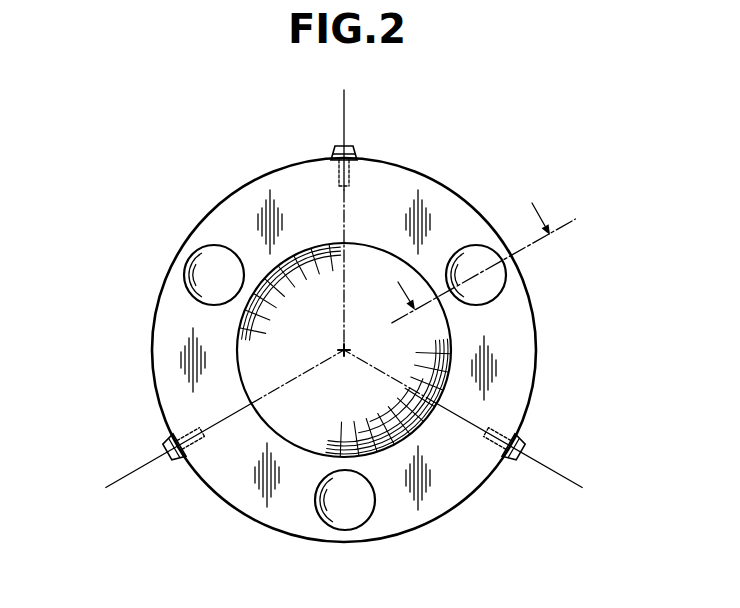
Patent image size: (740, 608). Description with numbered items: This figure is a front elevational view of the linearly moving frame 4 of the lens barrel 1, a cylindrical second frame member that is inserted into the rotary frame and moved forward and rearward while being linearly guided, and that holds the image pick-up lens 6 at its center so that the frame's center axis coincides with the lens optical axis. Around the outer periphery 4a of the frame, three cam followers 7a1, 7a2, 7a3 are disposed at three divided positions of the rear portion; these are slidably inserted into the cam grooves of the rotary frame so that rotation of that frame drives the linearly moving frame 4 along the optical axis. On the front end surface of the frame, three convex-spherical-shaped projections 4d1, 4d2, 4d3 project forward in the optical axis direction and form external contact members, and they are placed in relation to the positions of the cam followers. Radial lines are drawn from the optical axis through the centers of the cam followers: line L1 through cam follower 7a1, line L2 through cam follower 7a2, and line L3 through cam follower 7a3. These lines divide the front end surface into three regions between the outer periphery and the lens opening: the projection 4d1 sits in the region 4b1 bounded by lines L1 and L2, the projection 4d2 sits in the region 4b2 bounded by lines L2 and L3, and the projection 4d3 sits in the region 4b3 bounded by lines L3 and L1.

The lens barrel 1 is at (118, 210).
The linearly moving frame 4 is at (473, 205).
The outer peripheral surface of flange 4a is at (430, 178).
The region 4b1 is at (518, 385).
The region 4b2 is at (253, 493).
The region 4b3 is at (172, 328).
The convex-spherical-shaped projection 4d1 is at (500, 292).
The convex-spherical-shaped projection 4d2 is at (362, 508).
The convex-spherical-shaped projection 4d3 is at (212, 265).
The image pick-up lens 6 is at (290, 403).
The cam follower 7a1 is at (354, 148).
The cam follower 7a2 is at (527, 447).
The cam follower 7a3 is at (168, 440).
The line L1 is at (343, 118).
The line L2 is at (560, 472).
The line L3 is at (115, 468).